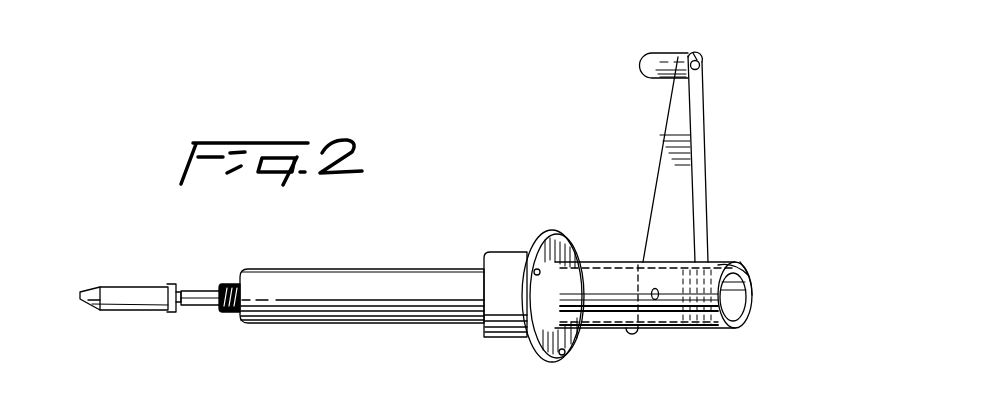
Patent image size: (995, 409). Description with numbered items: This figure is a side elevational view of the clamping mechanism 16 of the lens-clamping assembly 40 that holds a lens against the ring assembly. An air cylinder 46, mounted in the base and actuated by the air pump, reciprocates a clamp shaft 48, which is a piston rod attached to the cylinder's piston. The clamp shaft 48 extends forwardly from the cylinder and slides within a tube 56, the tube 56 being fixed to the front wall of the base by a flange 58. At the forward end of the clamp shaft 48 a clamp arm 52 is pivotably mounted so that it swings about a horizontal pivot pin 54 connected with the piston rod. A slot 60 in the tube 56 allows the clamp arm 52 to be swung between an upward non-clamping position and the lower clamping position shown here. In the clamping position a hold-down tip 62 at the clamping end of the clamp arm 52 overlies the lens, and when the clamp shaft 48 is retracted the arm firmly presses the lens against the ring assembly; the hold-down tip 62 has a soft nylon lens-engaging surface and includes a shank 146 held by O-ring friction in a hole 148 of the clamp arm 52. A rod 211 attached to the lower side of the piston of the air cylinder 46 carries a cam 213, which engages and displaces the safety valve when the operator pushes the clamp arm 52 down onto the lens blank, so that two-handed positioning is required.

The device 16 is at (280, 9).
The lens-clamping assembly 40 is at (705, 127).
The air cylinder 46 is at (427, 268).
The clamp shaft 48 is at (680, 320).
The clamp arm 52 is at (708, 205).
The pivot pin 54 is at (650, 334).
The tube 56 is at (752, 300).
The flange 58 is at (560, 252).
The slot 60 is at (734, 264).
The hold-down tip 62 is at (640, 68).
The shank 146 is at (700, 65).
The hole 148 is at (696, 53).
The rod 211 is at (200, 292).
The cam 213 is at (137, 287).